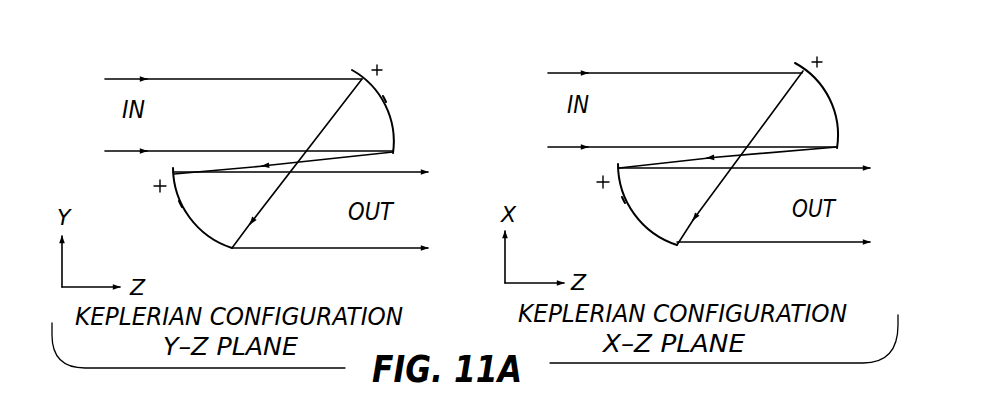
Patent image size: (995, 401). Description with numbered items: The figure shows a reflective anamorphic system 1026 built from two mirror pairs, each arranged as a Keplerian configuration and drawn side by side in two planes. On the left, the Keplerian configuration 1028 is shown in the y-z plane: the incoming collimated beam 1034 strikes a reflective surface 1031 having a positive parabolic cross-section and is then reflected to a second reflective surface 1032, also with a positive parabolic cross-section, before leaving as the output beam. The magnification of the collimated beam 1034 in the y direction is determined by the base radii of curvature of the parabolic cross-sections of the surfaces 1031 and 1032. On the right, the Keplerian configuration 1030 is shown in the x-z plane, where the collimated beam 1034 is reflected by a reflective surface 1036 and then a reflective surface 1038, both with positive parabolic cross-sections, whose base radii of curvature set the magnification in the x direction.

The reflective anamorphic system 1026 is at (426, 46).
The Keplerian configuration 1028 is at (303, 123).
The Keplerian configuration 1030 is at (748, 118).
The reflective surface 1031 is at (384, 98).
The reflective surface 1032 is at (180, 204).
The collimated beam 1034 is at (105, 123).
The reflective surface 1036 is at (823, 95).
The reflective surface 1038 is at (623, 200).